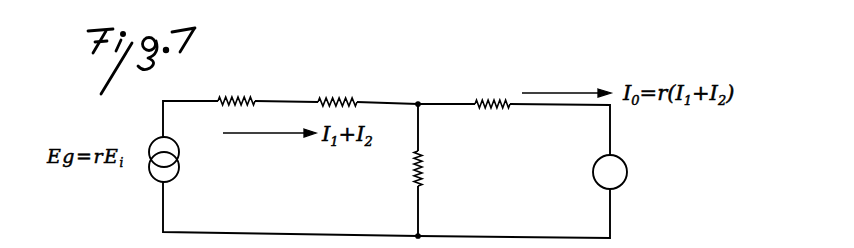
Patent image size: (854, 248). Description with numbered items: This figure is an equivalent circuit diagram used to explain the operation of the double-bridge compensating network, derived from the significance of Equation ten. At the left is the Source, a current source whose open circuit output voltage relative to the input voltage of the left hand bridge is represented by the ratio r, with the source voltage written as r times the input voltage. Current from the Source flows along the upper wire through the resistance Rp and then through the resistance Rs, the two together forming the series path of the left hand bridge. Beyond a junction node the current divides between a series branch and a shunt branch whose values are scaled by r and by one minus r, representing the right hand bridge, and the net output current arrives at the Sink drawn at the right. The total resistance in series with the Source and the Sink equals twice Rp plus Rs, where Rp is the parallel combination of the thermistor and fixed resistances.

The source Source is at (202, 159).
The parallel resistance Rp is at (233, 97).
The series resistance Rs is at (333, 98).
The sink Sink is at (627, 172).